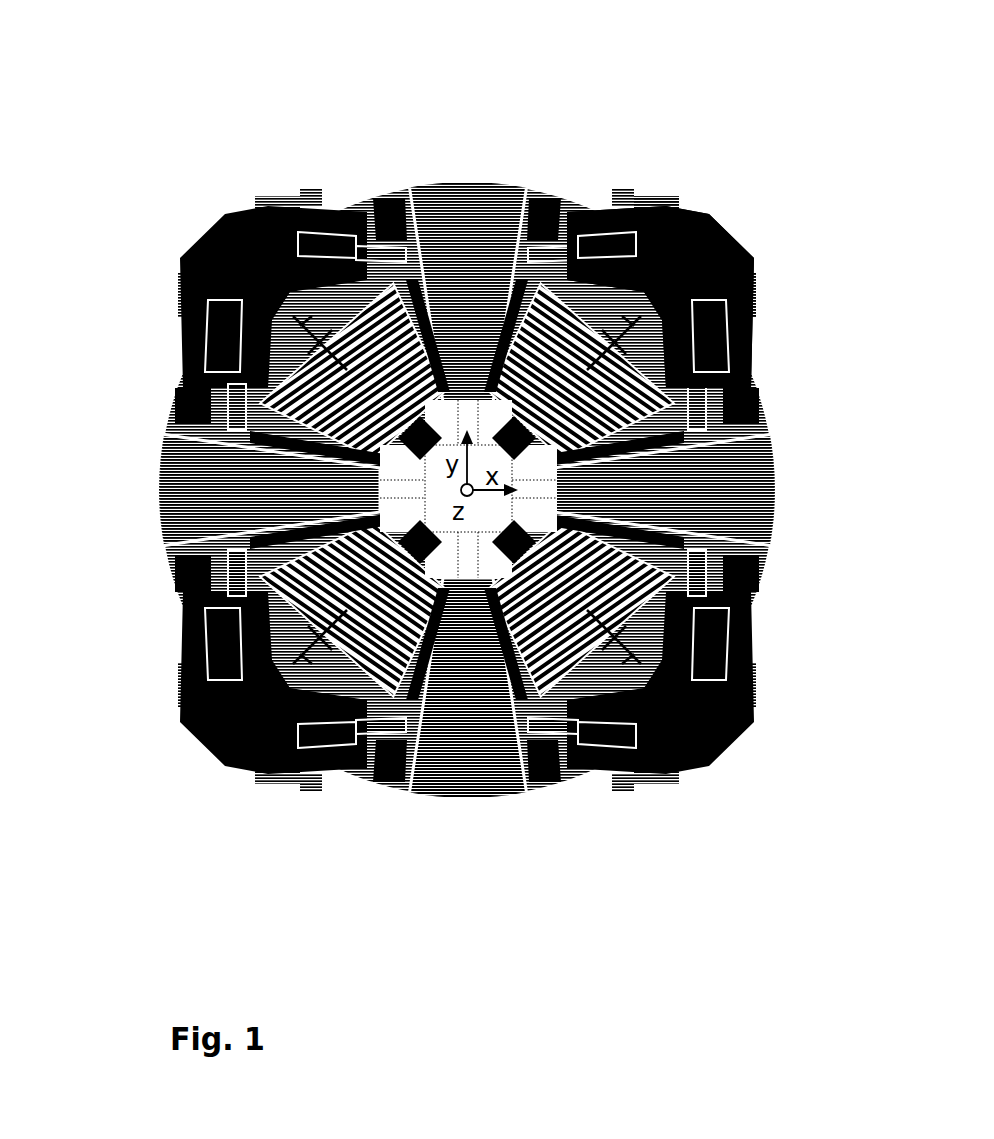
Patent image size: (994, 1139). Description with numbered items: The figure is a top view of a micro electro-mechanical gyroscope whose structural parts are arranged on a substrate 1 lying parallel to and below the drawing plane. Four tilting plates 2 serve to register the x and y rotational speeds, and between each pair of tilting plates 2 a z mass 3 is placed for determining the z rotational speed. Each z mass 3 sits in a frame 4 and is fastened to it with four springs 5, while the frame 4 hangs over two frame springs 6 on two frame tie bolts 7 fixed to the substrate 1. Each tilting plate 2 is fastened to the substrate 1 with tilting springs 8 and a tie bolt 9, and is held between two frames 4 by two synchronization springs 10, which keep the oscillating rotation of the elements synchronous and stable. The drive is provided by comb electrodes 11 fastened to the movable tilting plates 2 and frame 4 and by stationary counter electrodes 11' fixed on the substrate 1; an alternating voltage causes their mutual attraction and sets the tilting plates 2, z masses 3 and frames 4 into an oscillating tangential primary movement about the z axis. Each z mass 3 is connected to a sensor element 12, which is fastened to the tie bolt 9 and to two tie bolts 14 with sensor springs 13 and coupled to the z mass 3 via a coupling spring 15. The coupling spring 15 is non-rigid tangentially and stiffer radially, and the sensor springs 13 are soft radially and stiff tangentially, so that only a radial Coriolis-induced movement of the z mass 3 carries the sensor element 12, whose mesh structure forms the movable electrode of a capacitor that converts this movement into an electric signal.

The substrate 1 is at (205, 806).
The tilting plate 2 is at (445, 205).
The z mass 3 is at (238, 248).
The frame 4 is at (232, 222).
The spring 5 is at (660, 620).
The frame spring 6 is at (677, 210).
The frame tie bolt 7 is at (647, 213).
The tilting spring 8 is at (488, 540).
The tie bolt 9 is at (525, 527).
The synchronization spring 10 is at (227, 570).
The comb electrode 11 is at (172, 367).
The counter electrode 11' is at (380, 490).
The sensor element 12 is at (377, 357).
The sensor spring 13 is at (363, 323).
The tie bolt 14 is at (617, 337).
The coupling spring 15 is at (600, 195).